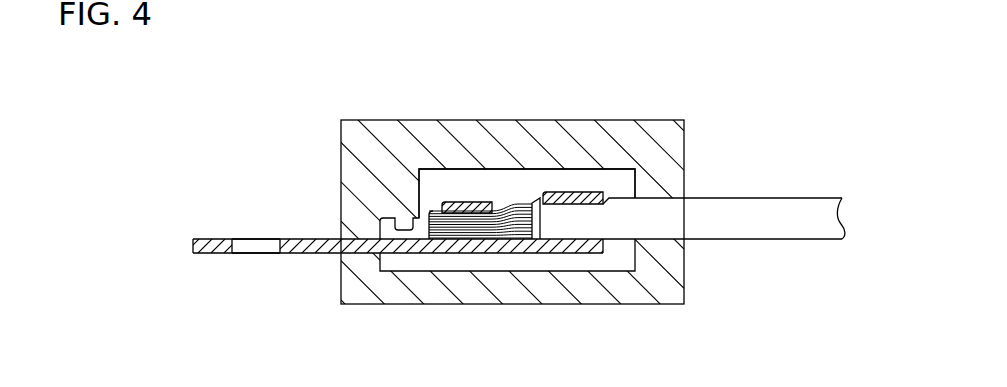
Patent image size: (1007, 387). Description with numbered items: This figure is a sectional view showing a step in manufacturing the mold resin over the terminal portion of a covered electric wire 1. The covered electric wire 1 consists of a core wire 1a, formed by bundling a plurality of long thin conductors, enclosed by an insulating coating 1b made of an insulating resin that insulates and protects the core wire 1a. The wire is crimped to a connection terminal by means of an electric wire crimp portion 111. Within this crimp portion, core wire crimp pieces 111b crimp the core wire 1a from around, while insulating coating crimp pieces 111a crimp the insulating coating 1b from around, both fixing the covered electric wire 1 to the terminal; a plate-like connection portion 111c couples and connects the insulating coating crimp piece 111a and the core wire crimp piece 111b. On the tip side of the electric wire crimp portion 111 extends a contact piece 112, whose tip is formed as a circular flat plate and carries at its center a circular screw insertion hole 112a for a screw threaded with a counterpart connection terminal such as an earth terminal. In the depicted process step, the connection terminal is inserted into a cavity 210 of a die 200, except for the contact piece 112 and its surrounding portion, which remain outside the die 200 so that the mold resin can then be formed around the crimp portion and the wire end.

The covered electric wire 1 is at (637, 238).
The core wire 1a is at (516, 228).
The insulating coating 1b is at (733, 241).
The electric wire crimp portion 111 is at (617, 60).
The insulating coating crimp piece 111a is at (579, 191).
The core wire crimp piece 111b is at (467, 202).
The plate-like connection portion 111c is at (540, 236).
The contact piece 112 is at (406, 213).
The screw insertion hole 112a is at (245, 237).
The die 200 is at (380, 128).
The cavity 210 is at (611, 176).